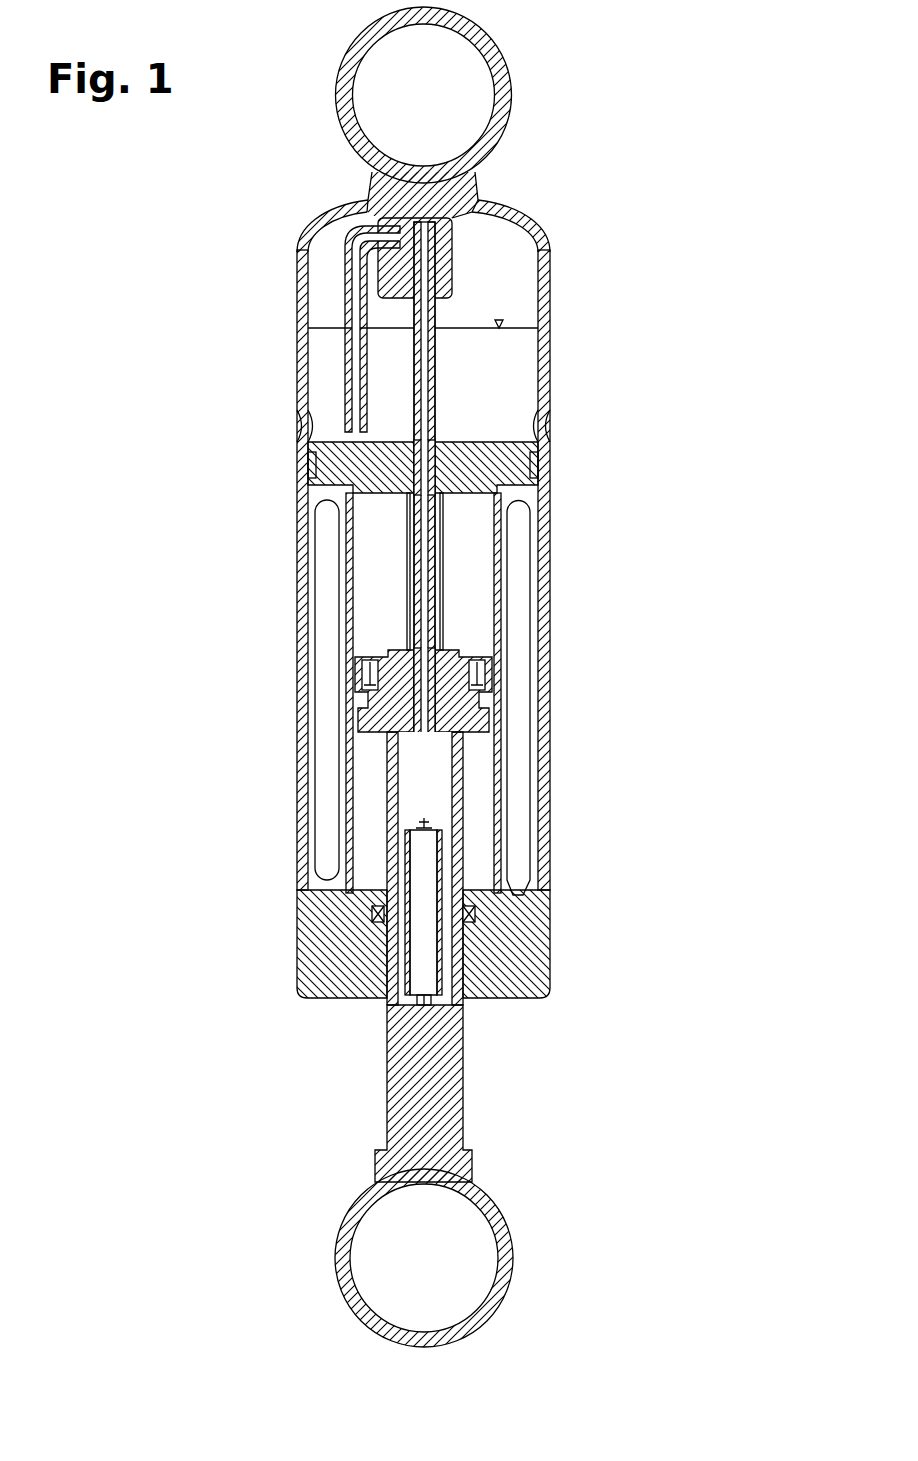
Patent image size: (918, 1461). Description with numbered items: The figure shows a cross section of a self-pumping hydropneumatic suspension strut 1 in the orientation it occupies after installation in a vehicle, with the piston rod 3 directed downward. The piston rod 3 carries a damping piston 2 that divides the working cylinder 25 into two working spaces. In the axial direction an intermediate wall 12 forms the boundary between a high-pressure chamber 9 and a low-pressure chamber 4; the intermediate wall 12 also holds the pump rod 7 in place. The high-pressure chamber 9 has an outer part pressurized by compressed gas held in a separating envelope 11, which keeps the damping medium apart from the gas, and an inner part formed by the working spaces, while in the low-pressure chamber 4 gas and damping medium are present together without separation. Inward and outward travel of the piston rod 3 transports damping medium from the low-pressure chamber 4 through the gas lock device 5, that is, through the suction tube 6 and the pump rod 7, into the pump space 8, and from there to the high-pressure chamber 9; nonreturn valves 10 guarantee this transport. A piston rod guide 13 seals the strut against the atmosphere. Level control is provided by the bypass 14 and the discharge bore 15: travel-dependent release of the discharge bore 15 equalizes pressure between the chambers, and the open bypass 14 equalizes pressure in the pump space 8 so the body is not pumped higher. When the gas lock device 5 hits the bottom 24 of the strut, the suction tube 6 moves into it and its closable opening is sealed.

The self-pumping hydropneumatic suspension strut 1 is at (216, 258).
The damping piston 2 is at (463, 685).
The piston rod 3 is at (450, 1095).
The low-pressure chamber 4 is at (525, 375).
The gas lock device 5 is at (367, 305).
The suction tube 6 is at (425, 345).
The pump rod 7 is at (440, 525).
The pump space 8 is at (425, 945).
The high-pressure chamber 9 is at (368, 538).
The nonreturn valves 10 is at (430, 834).
The separating envelope 11 is at (320, 603).
The intermediate wall 12 is at (545, 452).
The piston rod guide 13 is at (315, 940).
The bypass 14 is at (440, 649).
The discharge bore 15 is at (405, 712).
The bottom 24 is at (528, 210).
The working cylinder 25 is at (497, 762).